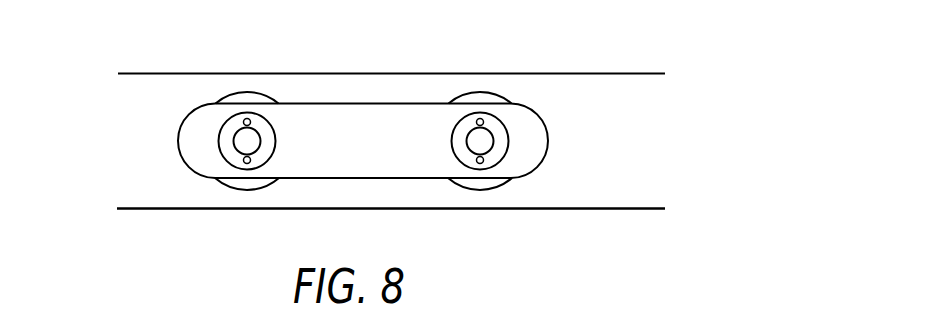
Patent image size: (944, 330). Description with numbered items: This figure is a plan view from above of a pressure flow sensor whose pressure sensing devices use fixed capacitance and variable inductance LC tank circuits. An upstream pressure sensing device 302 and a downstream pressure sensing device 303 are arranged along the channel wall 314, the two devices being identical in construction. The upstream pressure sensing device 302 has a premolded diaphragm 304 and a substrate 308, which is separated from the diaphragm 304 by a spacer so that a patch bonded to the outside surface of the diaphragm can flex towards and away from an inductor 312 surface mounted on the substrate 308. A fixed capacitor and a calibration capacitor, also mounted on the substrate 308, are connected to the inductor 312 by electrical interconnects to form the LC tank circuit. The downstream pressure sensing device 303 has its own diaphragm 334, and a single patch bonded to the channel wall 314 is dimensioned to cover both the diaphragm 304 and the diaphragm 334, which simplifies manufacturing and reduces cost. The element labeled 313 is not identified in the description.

The upstream pressure sensing device 302 is at (263, 111).
The downstream pressure sensing device 303 is at (453, 126).
The premolded diaphragm 304 is at (272, 102).
The substrate 308 is at (276, 140).
The inductor 312 is at (234, 143).
The track rail 313 is at (570, 209).
The channel wall 314 is at (140, 138).
The diaphragm 334 is at (501, 98).